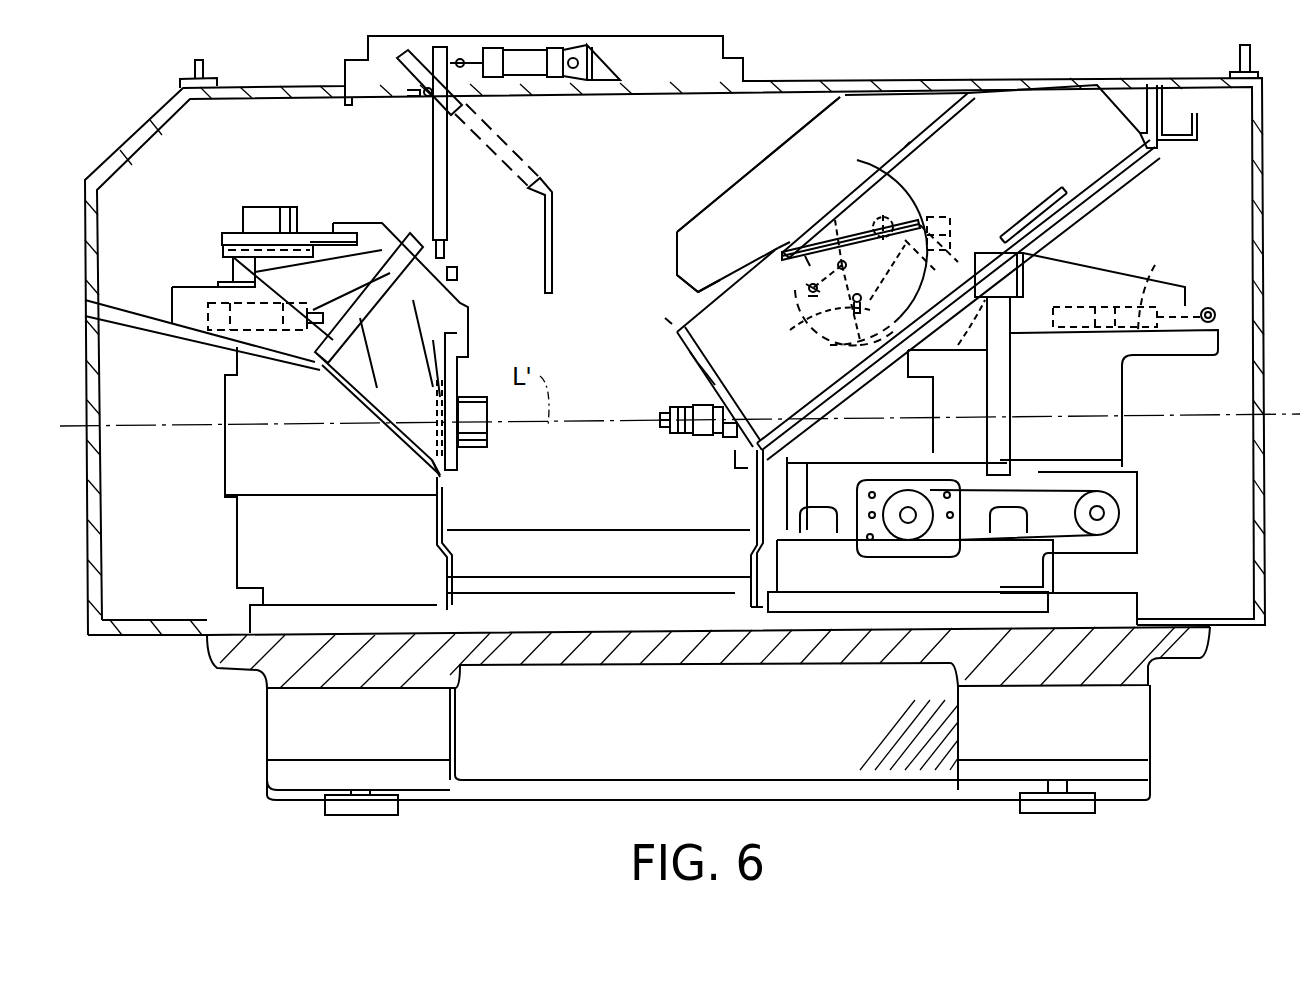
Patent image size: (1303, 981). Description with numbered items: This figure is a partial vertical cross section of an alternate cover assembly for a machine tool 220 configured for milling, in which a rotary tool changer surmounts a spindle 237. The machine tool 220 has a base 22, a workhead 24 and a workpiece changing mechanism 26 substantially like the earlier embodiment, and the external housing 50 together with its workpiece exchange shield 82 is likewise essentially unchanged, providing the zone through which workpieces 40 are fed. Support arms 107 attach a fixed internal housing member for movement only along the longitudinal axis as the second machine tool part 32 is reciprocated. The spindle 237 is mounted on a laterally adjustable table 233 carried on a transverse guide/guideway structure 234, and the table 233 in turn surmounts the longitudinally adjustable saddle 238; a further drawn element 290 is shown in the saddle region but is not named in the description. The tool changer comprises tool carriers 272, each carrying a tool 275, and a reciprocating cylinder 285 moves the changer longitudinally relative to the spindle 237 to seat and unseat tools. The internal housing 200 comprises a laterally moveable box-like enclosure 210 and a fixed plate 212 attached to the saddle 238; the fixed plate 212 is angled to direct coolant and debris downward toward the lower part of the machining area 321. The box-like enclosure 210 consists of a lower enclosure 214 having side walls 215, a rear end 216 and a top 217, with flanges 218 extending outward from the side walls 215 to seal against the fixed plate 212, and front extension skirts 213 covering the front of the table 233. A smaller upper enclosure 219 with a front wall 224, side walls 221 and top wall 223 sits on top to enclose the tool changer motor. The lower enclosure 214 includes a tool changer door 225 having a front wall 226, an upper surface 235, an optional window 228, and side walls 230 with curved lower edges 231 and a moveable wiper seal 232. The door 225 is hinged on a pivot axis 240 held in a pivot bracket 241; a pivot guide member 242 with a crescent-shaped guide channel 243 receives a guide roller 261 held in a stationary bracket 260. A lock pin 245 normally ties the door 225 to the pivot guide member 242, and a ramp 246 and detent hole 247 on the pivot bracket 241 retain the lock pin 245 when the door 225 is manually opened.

The base 22 is at (430, 677).
The workhead 24 is at (240, 470).
The workpiece changing mechanism 26 is at (392, 212).
The second machine tool part 32 is at (945, 424).
The workpieces 40 is at (268, 205).
The external housing 50 is at (334, 76).
The workpiece exchange shield 82 is at (466, 158).
The support arms 107 is at (1005, 392).
The internal housing 200 is at (764, 117).
The box-like enclosure 210 is at (670, 306).
The fixed plate 212 is at (1058, 215).
The front extension skirts 213 is at (750, 495).
The lower enclosure 214 is at (934, 112).
The side walls 215 is at (1062, 116).
The rear end 216 is at (1118, 112).
The top 217 is at (903, 148).
The flanges 218 is at (1058, 185).
The upper enclosure 219 is at (829, 112).
The machine tool 220 is at (706, 662).
The side walls 221 is at (768, 168).
The top wall 223 is at (690, 215).
The front wall 224 is at (685, 262).
The tool changer door 225 is at (700, 362).
The front wall 226 is at (690, 352).
The window 228 is at (700, 365).
The side walls 230 is at (729, 348).
The curved lower edges 231 is at (1020, 273).
The moveable wiper seal 232 is at (803, 245).
The table 233 is at (820, 470).
The transverse guide/guideway structure 234 is at (792, 515).
The upper surface 235 is at (705, 258).
The spindle 237 is at (740, 462).
The saddle 238 is at (988, 533).
The pivot axis 240 is at (855, 230).
The pivot bracket 241 is at (852, 192).
The pivot guide member 242 is at (948, 210).
The crescent-shaped guide channel 243 is at (942, 240).
The lock pin 245 is at (840, 308).
The ramp 246 is at (812, 320).
The detent hole 247 is at (805, 293).
The stationary bracket 260 is at (963, 340).
The guide roller 261 is at (868, 225).
The tool carriers 272 is at (712, 437).
The tool 275 is at (678, 408).
The reciprocating cylinder 285 is at (1145, 265).
The mounting plate 290 is at (755, 560).
The machining area 321 is at (528, 546).